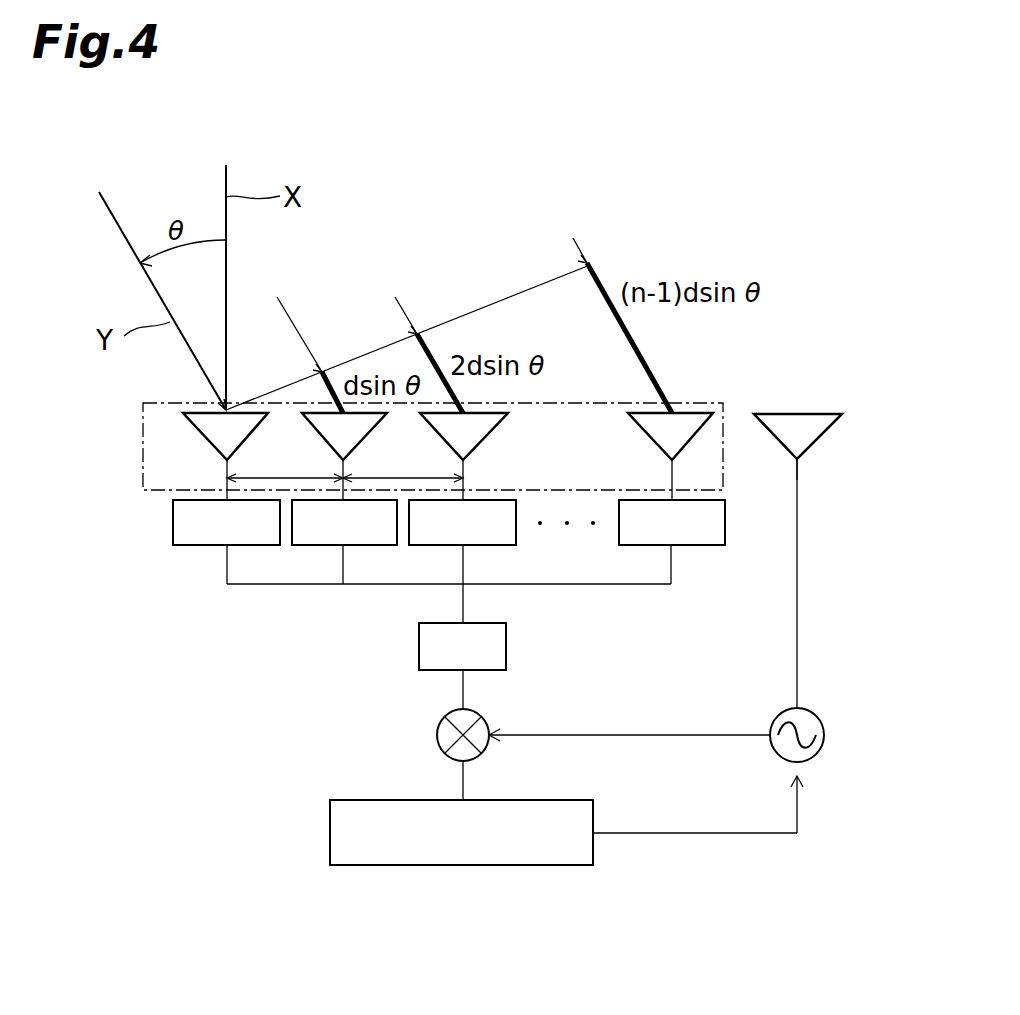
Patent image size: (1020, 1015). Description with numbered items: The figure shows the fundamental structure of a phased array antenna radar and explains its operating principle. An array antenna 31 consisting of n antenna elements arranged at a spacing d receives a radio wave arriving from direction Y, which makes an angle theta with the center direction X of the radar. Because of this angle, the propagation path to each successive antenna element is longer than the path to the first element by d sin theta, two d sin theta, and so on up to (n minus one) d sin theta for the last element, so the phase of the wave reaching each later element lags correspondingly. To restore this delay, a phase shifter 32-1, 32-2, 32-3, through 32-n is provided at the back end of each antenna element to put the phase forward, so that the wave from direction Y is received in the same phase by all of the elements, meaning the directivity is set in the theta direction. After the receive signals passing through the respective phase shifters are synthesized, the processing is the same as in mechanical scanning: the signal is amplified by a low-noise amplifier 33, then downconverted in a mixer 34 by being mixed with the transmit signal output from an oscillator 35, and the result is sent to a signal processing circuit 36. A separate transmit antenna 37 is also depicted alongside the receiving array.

The array antenna 31 is at (690, 403).
The phase shifter 32-1 is at (240, 545).
The phase shifter 32-2 is at (360, 545).
The phase shifter 32-3 is at (490, 545).
The phase shifter 32-n is at (695, 545).
The low-noise amplifier 33 is at (506, 640).
The mixer 34 is at (483, 718).
The oscillator 35 is at (815, 712).
The signal processing circuit 36 is at (570, 800).
The transmit antenna 37 is at (825, 432).